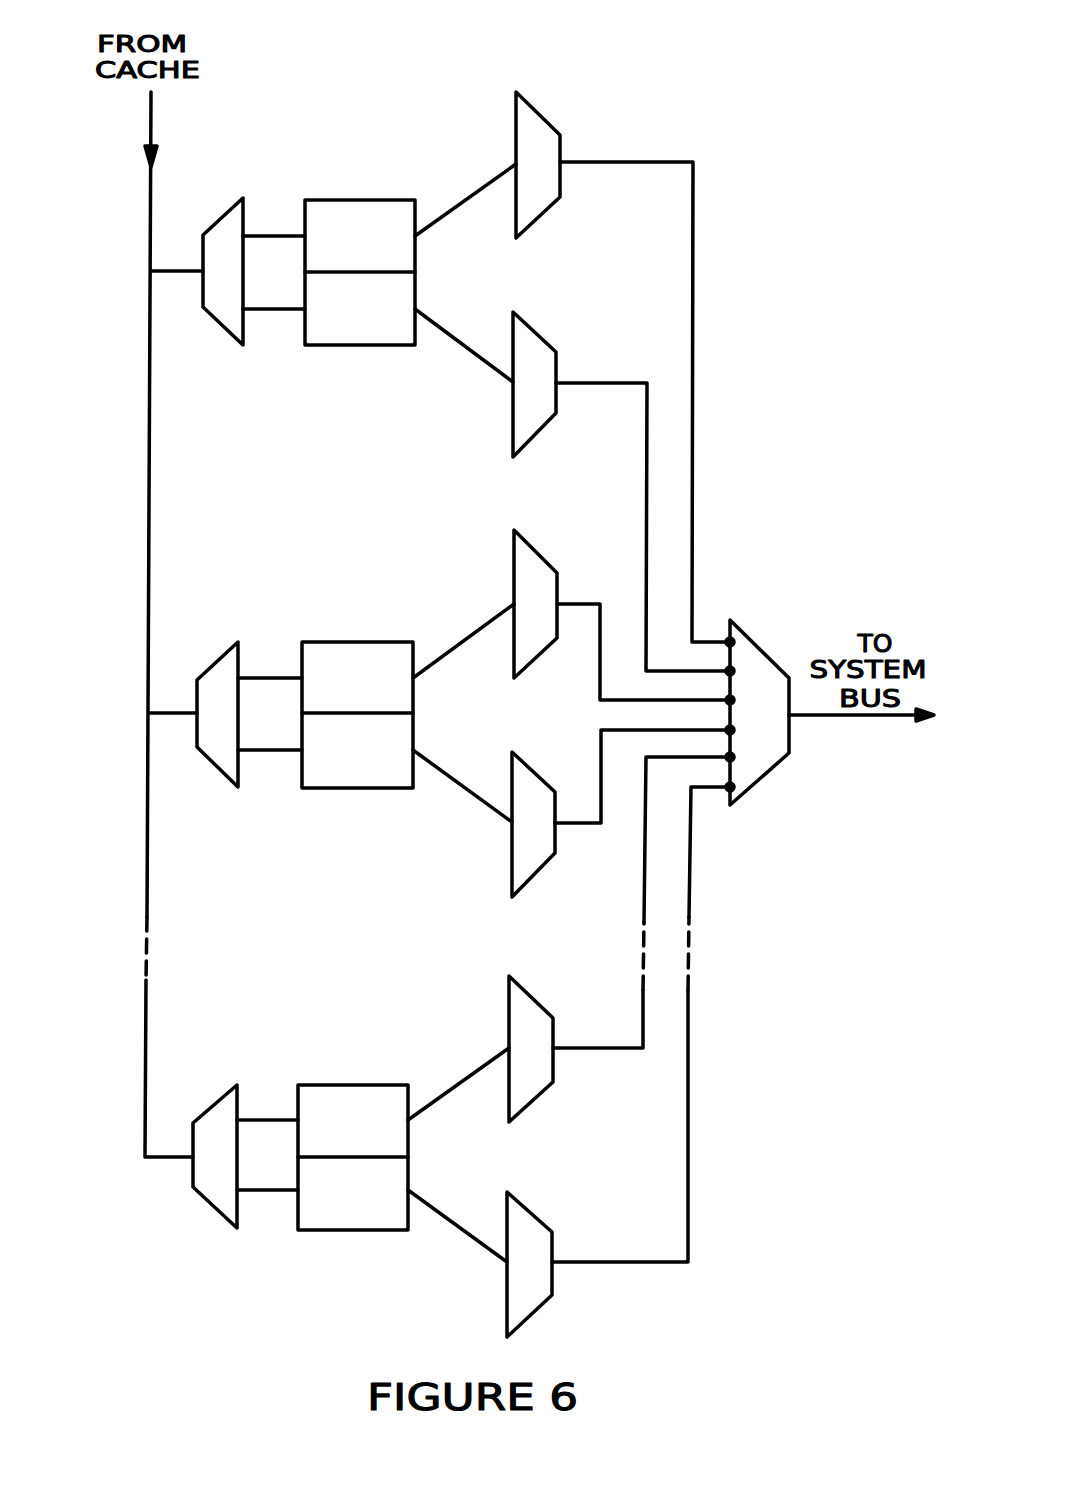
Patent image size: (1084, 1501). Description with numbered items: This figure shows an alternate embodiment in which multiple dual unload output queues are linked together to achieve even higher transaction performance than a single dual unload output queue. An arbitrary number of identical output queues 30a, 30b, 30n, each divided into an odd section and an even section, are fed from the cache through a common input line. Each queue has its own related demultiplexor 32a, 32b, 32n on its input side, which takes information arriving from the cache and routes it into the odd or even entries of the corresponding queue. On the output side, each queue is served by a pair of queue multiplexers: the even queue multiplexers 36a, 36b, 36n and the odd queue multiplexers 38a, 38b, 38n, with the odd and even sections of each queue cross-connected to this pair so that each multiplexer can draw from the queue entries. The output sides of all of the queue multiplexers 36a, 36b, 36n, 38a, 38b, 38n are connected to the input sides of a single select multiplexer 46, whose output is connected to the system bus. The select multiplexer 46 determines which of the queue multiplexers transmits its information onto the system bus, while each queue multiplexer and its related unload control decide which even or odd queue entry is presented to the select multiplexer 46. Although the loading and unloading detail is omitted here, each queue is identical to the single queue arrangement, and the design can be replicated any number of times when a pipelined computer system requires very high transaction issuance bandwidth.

The output queue 30a is at (389, 158).
The output queue 30b is at (338, 599).
The output queue 30n is at (389, 1054).
The demultiplexor 32a is at (232, 227).
The demultiplexor 32b is at (222, 670).
The demultiplexor 32n is at (227, 1105).
The even queue multiplexer 36a is at (533, 128).
The even queue multiplexer 36b is at (527, 558).
The even queue multiplexer 36n is at (528, 1007).
The odd queue multiplexer 38a is at (532, 343).
The odd queue multiplexer 38b is at (528, 787).
The odd queue multiplexer 38n is at (522, 1222).
The select multiplexer 46 is at (767, 755).